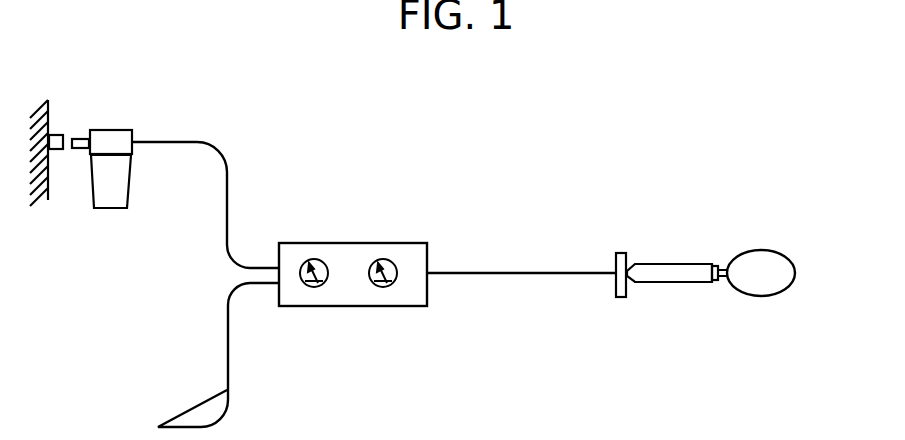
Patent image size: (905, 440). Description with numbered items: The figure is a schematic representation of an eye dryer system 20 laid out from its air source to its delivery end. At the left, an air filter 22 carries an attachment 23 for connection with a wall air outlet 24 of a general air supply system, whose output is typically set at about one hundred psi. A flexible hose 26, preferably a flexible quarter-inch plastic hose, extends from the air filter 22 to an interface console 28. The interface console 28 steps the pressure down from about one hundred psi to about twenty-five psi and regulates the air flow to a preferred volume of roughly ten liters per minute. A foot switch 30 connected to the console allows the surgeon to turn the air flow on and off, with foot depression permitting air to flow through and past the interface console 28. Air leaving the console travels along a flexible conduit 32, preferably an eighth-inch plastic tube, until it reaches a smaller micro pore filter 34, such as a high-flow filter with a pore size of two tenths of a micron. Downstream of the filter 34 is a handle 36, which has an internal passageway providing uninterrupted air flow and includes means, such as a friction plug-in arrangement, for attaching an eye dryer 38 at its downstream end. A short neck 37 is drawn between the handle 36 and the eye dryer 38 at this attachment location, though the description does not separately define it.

The eye dryer system 20 is at (318, 205).
The air filter 22 is at (113, 137).
The attachment 23 is at (80, 148).
The wall air outlet 24 is at (55, 135).
The flexible hose 26 is at (196, 140).
The interface console 28 is at (353, 243).
The foot switch 30 is at (227, 378).
The flexible conduit 32 is at (523, 272).
The micro pore filter 34 is at (620, 252).
The handle 36 is at (677, 264).
The syringe neck 37 is at (727, 268).
The eye dryer 38 is at (765, 252).